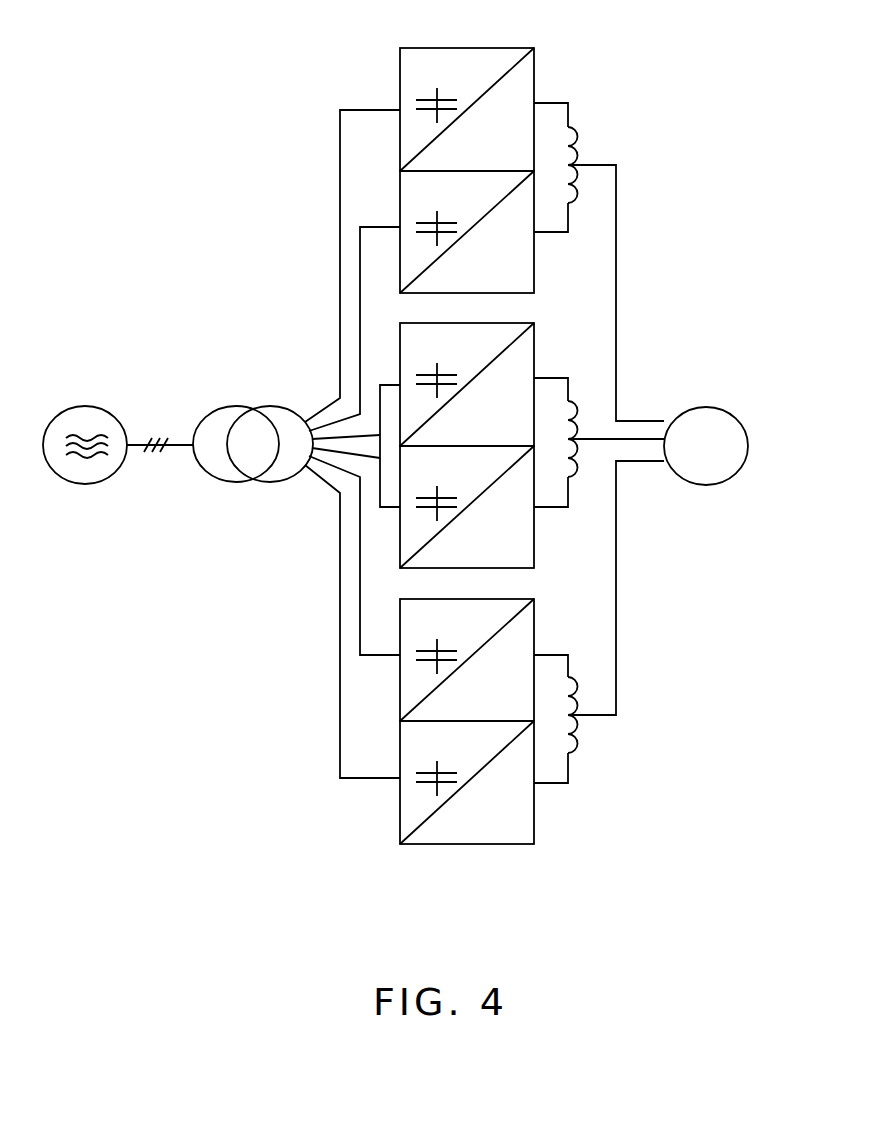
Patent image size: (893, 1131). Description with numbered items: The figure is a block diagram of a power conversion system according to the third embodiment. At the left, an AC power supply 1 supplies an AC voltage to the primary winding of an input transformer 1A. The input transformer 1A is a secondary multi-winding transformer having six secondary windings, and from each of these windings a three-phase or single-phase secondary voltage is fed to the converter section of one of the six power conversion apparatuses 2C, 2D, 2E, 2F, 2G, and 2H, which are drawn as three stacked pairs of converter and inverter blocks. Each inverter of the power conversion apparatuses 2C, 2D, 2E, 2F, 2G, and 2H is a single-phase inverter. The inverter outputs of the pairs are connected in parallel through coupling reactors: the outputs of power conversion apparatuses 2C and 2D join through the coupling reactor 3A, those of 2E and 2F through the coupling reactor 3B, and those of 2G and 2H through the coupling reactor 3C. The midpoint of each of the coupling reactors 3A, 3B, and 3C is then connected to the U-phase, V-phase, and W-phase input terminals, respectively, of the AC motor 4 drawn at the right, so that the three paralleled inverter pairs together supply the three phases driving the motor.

The AC power supply 1 is at (86, 406).
The input transformer 1A is at (238, 404).
The power conversion apparatus 2C is at (523, 45).
The power conversion apparatus 2D is at (538, 277).
The power conversion apparatus 2E is at (537, 335).
The power conversion apparatus 2F is at (538, 547).
The power conversion apparatus 2G is at (538, 613).
The power conversion apparatus 2H is at (538, 827).
The coupling reactor 3A is at (577, 147).
The coupling reactor 3B is at (575, 400).
The coupling reactor 3C is at (592, 662).
The AC motor 4 is at (716, 406).